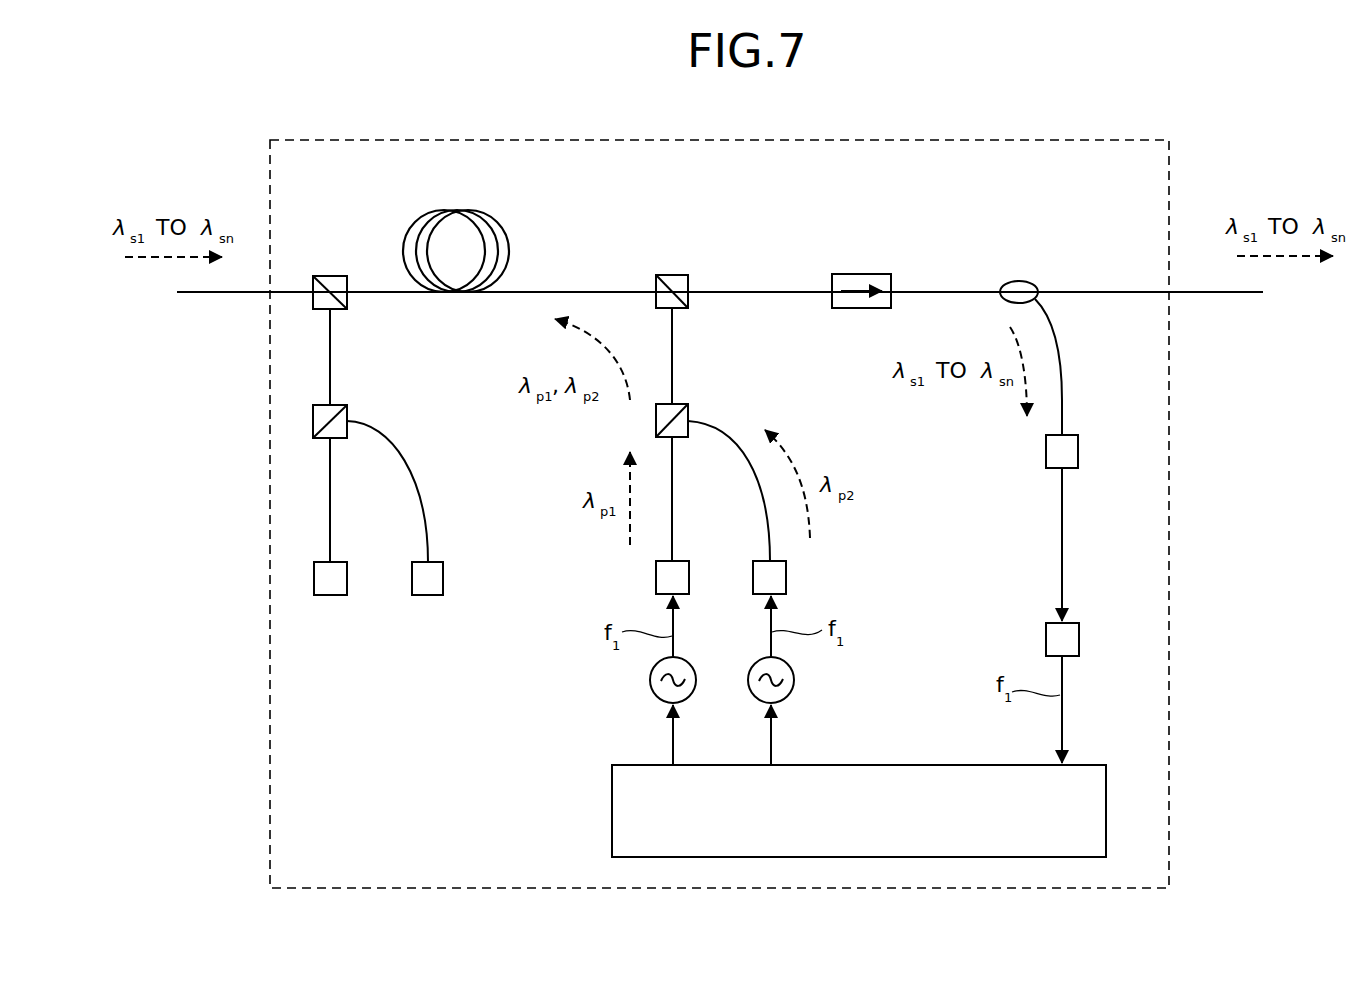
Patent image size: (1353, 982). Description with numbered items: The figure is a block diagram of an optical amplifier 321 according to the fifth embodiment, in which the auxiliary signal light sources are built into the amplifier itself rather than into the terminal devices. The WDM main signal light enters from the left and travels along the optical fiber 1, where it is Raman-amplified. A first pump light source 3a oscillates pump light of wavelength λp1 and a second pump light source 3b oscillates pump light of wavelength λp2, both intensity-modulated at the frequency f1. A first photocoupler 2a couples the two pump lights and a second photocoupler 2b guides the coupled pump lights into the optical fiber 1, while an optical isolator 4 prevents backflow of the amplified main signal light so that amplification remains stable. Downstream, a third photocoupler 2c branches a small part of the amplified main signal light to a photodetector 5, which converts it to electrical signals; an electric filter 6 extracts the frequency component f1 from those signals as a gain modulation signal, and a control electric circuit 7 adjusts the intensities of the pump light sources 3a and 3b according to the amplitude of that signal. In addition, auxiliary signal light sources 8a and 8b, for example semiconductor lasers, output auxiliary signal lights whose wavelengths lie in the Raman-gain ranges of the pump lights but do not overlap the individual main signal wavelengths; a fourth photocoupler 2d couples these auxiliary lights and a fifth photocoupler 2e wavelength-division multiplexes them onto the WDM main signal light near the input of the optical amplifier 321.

The optical fiber 1 is at (495, 218).
The first photocoupler 2a is at (683, 404).
The second photocoupler 2b is at (683, 274).
The third photocoupler 2c is at (1033, 283).
The fourth photocoupler 2d is at (345, 405).
The fifth photocoupler 2e is at (338, 276).
The first pump light source 3a is at (657, 579).
The second pump light source 3b is at (786, 578).
The optical isolator 4 is at (876, 274).
The photodetector 5 is at (1078, 452).
The electric filter 6 is at (1046, 640).
The control electric circuit 7 is at (612, 815).
The auxiliary signal light source 8a is at (330, 598).
The auxiliary signal light source 8b is at (428, 598).
The optical amplifier 321 is at (1169, 393).